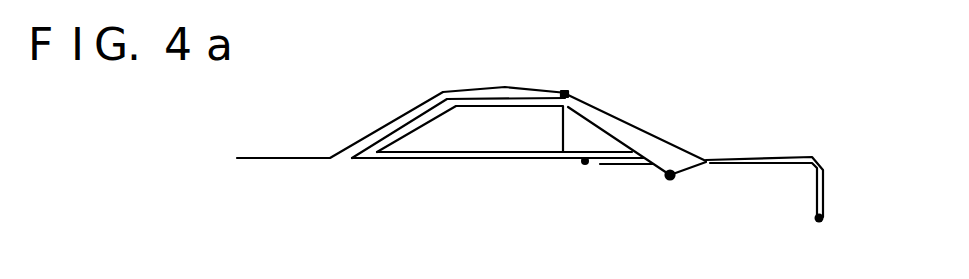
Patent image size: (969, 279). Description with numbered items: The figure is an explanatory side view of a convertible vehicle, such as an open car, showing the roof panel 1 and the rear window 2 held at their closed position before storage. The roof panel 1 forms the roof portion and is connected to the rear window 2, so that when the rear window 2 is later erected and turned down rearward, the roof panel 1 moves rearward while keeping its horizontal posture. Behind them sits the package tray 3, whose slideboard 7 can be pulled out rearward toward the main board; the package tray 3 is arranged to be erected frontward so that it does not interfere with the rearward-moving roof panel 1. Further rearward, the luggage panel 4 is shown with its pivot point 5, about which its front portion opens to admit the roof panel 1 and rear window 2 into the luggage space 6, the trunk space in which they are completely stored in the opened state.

The roof panel 1 is at (483, 88).
The rear window 2 is at (633, 120).
The package tray 3 is at (600, 145).
The luggage panel 4 is at (765, 155).
The pivot point 5 is at (820, 222).
The luggage space 6 is at (778, 195).
The slideboard 7 is at (608, 165).